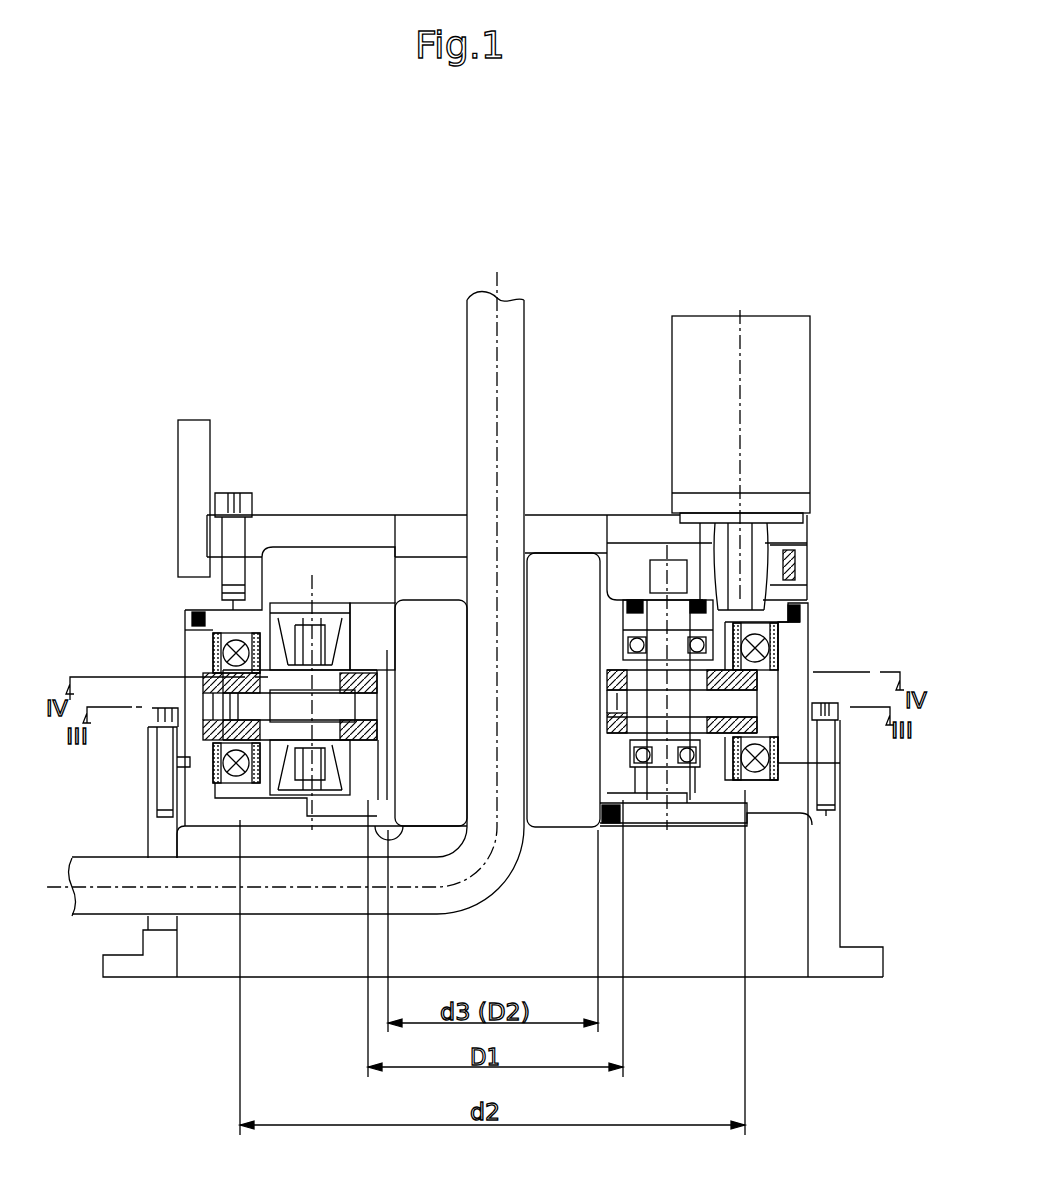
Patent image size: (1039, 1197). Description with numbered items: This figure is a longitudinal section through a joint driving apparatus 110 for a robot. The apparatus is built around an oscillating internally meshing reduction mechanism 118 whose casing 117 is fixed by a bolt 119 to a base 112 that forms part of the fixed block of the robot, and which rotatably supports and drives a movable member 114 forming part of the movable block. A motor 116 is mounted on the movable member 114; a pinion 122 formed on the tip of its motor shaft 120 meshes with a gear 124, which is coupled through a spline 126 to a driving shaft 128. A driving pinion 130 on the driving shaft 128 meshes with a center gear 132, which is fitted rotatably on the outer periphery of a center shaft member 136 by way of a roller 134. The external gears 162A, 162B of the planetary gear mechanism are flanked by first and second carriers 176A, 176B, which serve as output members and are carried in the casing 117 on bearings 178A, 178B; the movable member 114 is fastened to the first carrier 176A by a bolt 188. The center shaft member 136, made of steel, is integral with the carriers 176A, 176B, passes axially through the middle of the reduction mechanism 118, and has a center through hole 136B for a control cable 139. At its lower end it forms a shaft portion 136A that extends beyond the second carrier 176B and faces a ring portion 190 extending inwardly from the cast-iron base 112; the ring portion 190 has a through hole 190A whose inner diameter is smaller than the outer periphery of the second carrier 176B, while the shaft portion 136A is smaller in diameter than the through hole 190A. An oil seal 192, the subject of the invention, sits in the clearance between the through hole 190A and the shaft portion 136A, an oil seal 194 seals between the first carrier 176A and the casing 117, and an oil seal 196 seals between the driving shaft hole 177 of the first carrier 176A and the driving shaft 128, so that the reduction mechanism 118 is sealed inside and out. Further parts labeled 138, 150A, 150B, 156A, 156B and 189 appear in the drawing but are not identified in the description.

The joint driving apparatus 110 is at (584, 222).
The base 112 is at (833, 892).
The movable member 114 is at (210, 420).
The motor 116 is at (690, 330).
The casing 117 is at (792, 662).
The oscillating internally meshing reduction mechanism 118 is at (815, 619).
The bolt 119 is at (828, 787).
The motor shaft 120 is at (746, 565).
The pinion 122 is at (790, 560).
The gear 124 is at (685, 565).
The spline 126 is at (630, 572).
The driving shaft 128 is at (655, 625).
The driving pinion 130 is at (757, 710).
The center gear 132 is at (613, 707).
The roller 134 is at (610, 697).
The center shaft member 136 is at (392, 767).
The shaft portion 136A is at (400, 840).
The center through hole 136B is at (395, 750).
The housing upper portion 138 is at (390, 647).
The control cable 139 is at (452, 903).
The upper bevel gear 150A is at (298, 668).
The lower bevel gear 150B is at (298, 767).
The upper spacer ring 156A is at (222, 682).
The lower spacer ring 156B is at (222, 730).
The external gear 162A is at (375, 688).
The external gear 162B is at (385, 730).
The first carrier 176A is at (370, 613).
The second carrier 176B is at (353, 780).
The driving shaft hole 177 is at (627, 623).
The bearing 178A is at (200, 642).
The bearing 178B is at (760, 782).
The bolt 188 is at (238, 532).
The bolt 189 is at (158, 793).
The ring portion 190 is at (703, 808).
The through hole 190A is at (612, 823).
The oil seal 192 is at (568, 802).
The oil seal 194 is at (800, 603).
The oil seal 196 is at (600, 597).